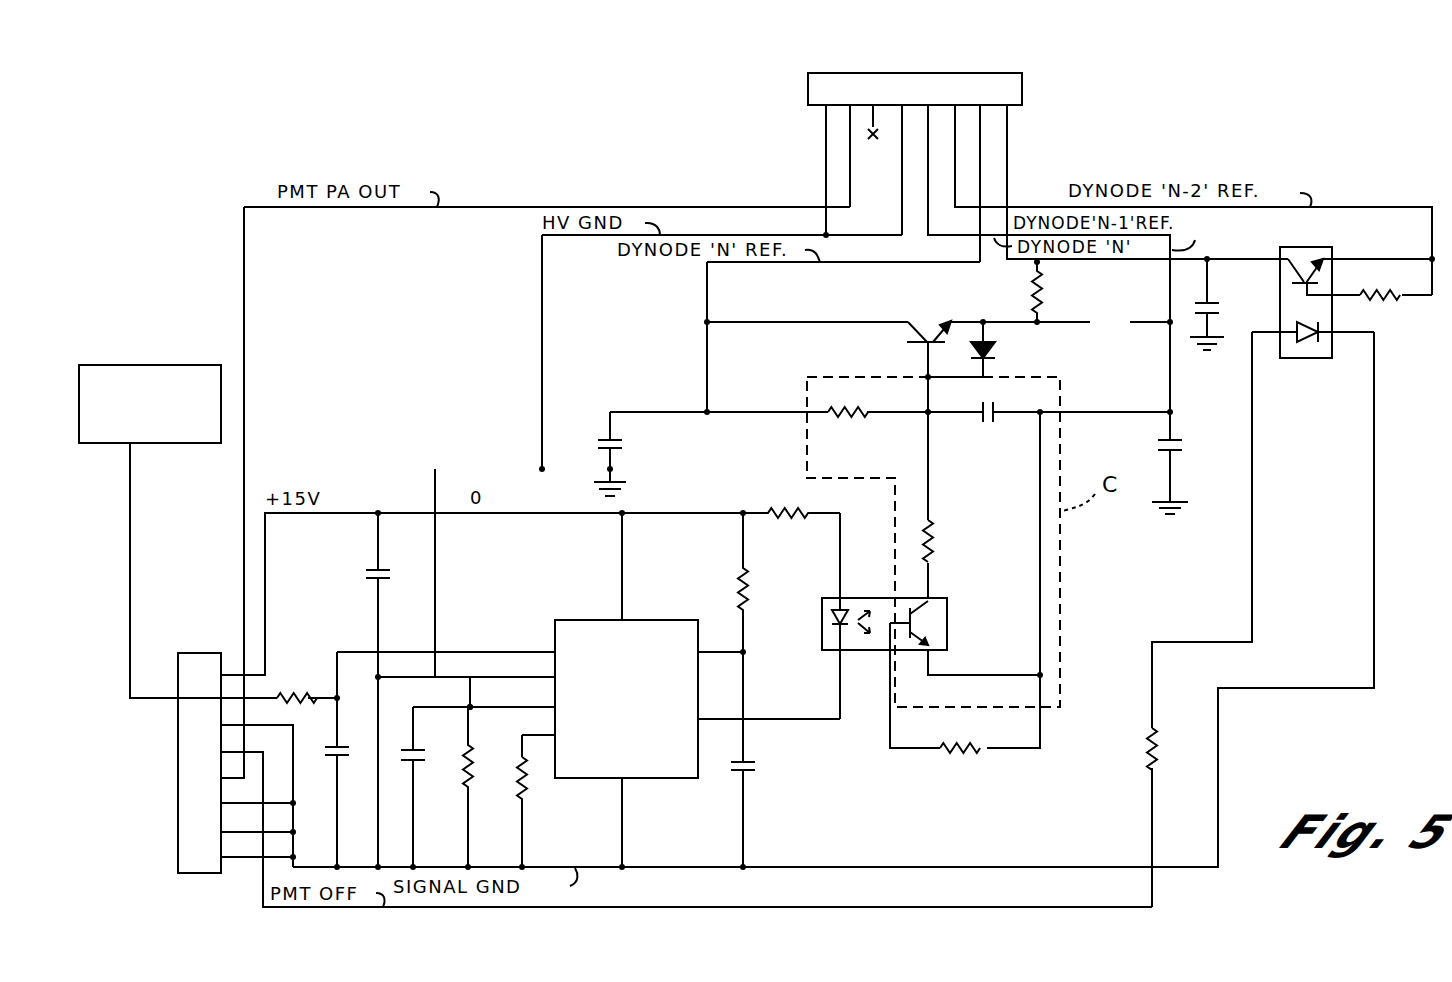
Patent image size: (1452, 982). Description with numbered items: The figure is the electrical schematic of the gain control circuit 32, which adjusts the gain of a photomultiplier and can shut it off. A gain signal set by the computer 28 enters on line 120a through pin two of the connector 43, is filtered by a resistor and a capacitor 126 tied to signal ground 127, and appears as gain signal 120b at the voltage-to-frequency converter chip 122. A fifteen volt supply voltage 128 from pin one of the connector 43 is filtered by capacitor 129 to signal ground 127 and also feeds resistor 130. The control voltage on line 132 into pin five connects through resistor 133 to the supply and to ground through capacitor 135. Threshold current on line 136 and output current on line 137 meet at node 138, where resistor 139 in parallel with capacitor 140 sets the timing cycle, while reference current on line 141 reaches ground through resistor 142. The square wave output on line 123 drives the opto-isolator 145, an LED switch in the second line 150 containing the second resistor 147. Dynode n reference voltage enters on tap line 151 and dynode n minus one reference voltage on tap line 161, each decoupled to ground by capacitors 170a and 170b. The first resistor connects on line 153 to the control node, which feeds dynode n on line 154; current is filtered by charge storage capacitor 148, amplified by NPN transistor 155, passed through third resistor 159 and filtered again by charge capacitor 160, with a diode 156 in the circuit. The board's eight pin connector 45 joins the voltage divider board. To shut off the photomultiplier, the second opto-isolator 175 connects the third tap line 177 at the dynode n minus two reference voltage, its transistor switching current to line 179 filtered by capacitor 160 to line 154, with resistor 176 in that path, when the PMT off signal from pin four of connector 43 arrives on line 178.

The computer 28 is at (148, 364).
The gain control circuit 32 is at (1238, 165).
The connector 43 is at (178, 750).
The 8 pin board connector 45 is at (1022, 92).
The gain signal line 120a is at (266, 697).
The gain signal 120b is at (355, 652).
The voltage-to-frequency converter chip 122 is at (645, 620).
The line 123 is at (763, 718).
The capacitor 126 is at (349, 748).
The signal ground 127 is at (663, 867).
The supply voltage 128 is at (349, 513).
The capacitor 129 is at (372, 573).
The resistor 130 is at (784, 506).
The line 132 is at (735, 651).
The resistor 133 is at (748, 597).
The capacitor 135 is at (750, 763).
The threshold current line 136 is at (492, 676).
The output current line 137 is at (518, 708).
The node 138 is at (470, 707).
The resistor 139 is at (480, 763).
The capacitor 140 is at (425, 745).
The reference current line 141 is at (538, 737).
The resistor 142 is at (522, 799).
The opto-isolator 145 is at (868, 598).
The second resistor 147 is at (930, 563).
The charge storage capacitor 148 is at (988, 424).
The second line 150 is at (930, 493).
The tap line 151 is at (707, 299).
The line 153 is at (750, 412).
The dynode line 154 is at (1007, 152).
The NPN transistor 155 is at (928, 320).
The diode 156 is at (995, 351).
The third resistor 159 is at (1045, 291).
The charge capacitor 160 is at (1210, 306).
The tap line 161 is at (1090, 412).
The capacitor 170a is at (597, 440).
The capacitor 170b is at (1185, 455).
The second opto-isolator 175 is at (1334, 253).
The resistor 176 is at (1395, 301).
The third tap line 177 is at (1392, 207).
The line 178 is at (660, 907).
The line 179 is at (1225, 259).